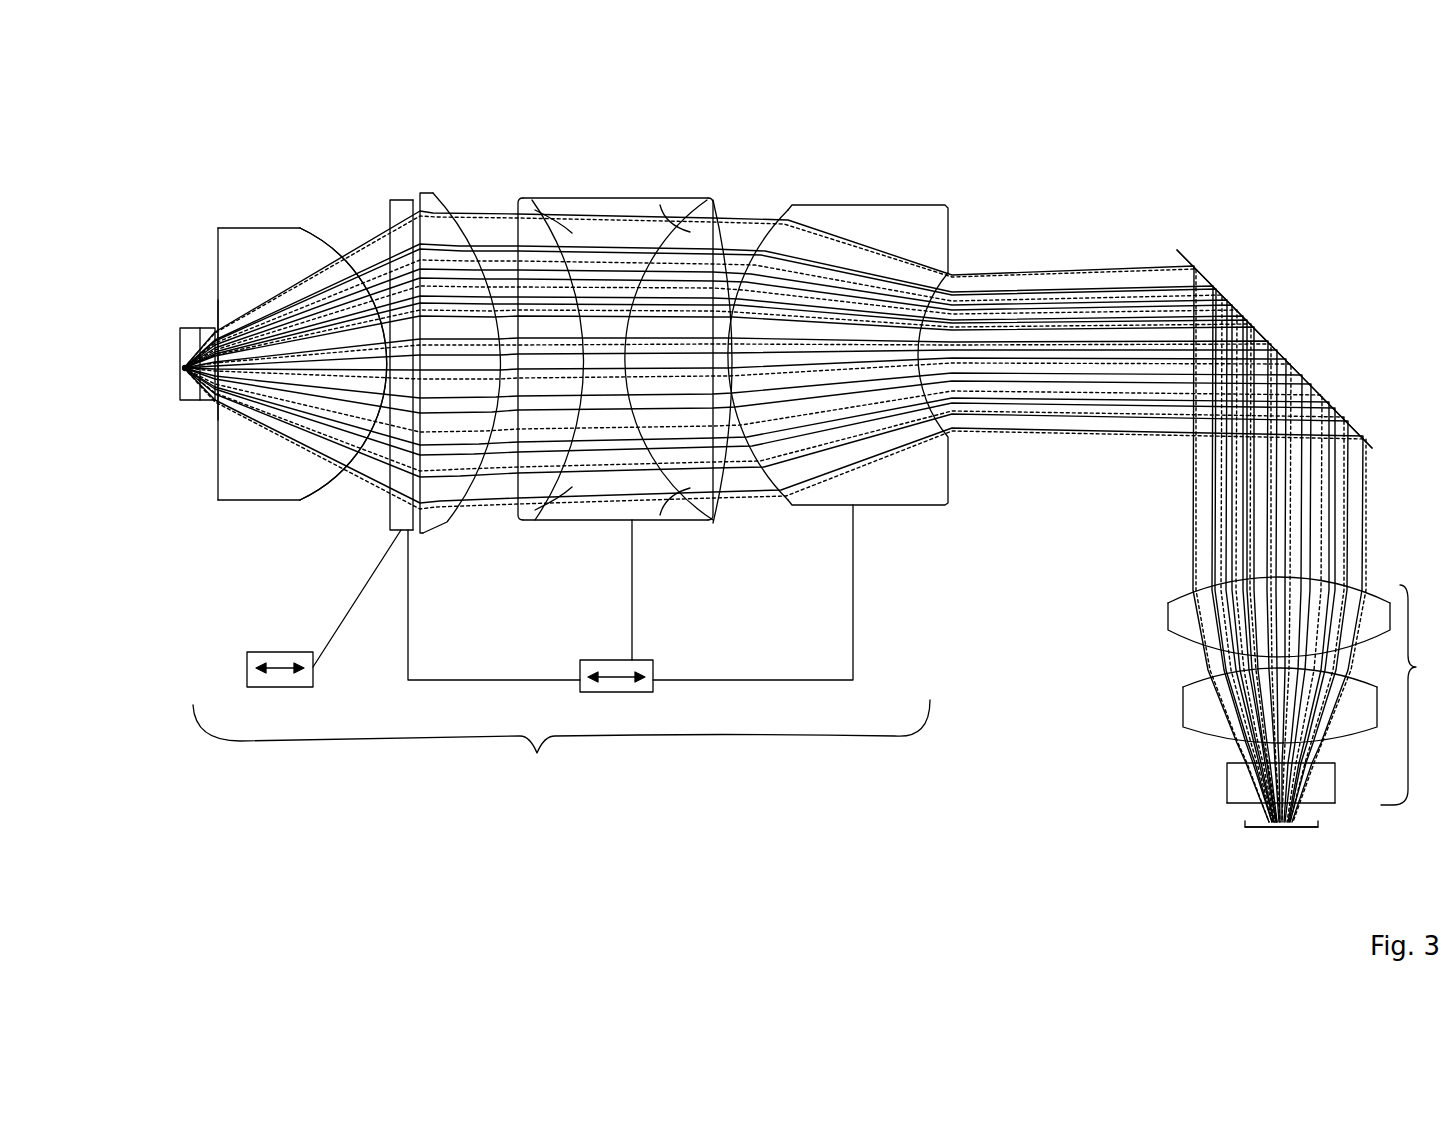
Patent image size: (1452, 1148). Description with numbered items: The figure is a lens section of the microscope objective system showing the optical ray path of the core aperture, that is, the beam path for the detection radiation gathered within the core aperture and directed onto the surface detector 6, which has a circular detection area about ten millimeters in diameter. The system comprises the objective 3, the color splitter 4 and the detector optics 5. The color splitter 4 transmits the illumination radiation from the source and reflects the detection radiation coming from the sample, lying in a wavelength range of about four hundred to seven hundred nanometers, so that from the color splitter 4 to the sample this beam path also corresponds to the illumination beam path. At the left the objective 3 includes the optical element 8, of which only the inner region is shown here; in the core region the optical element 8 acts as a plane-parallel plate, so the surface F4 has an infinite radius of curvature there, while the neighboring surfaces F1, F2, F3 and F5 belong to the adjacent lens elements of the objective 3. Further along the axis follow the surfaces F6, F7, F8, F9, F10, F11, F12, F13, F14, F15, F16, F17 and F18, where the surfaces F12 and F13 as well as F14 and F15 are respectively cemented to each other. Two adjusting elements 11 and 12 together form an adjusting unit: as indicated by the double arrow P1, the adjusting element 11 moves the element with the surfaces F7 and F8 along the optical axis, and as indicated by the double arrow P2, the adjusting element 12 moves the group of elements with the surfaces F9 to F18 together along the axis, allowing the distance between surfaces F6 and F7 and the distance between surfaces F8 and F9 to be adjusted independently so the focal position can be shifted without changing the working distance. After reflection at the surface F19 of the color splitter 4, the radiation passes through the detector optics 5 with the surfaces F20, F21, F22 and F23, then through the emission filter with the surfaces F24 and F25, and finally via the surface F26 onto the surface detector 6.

The objective 3 is at (561, 750).
The color splitter 4 is at (1368, 442).
The detector optics 5 is at (1411, 695).
The surface detector 6 is at (1305, 829).
The optical element 8 is at (198, 406).
The adjusting element 11 is at (297, 689).
The adjusting element 12 is at (637, 692).
The double arrow P1 is at (270, 688).
The double arrow P2 is at (613, 692).
The surface F1 is at (182, 400).
The surface F2 is at (215, 330).
The surface F3 is at (200, 402).
The surface F4 is at (212, 404).
The surface F5 is at (220, 324).
The surface F6 is at (356, 256).
The surface F7 is at (388, 212).
The surface F8 is at (417, 213).
The surface F9 is at (400, 535).
The surface F10 is at (450, 535).
The surface F11 is at (507, 513).
The surface F12 is at (570, 235).
The surface F13 is at (533, 515).
The surface F14 is at (710, 512).
The surface F15 is at (660, 230).
The surface F16 is at (737, 228).
The surface F17 is at (763, 233).
The surface F18 is at (958, 437).
The surface F19 is at (1188, 257).
The surface F20 is at (1193, 593).
The surface F21 is at (1185, 655).
The surface F22 is at (1195, 678).
The surface F23 is at (1200, 745).
The surface F24 is at (1227, 763).
The surface F25 is at (1240, 802).
The surface F26 is at (1250, 823).